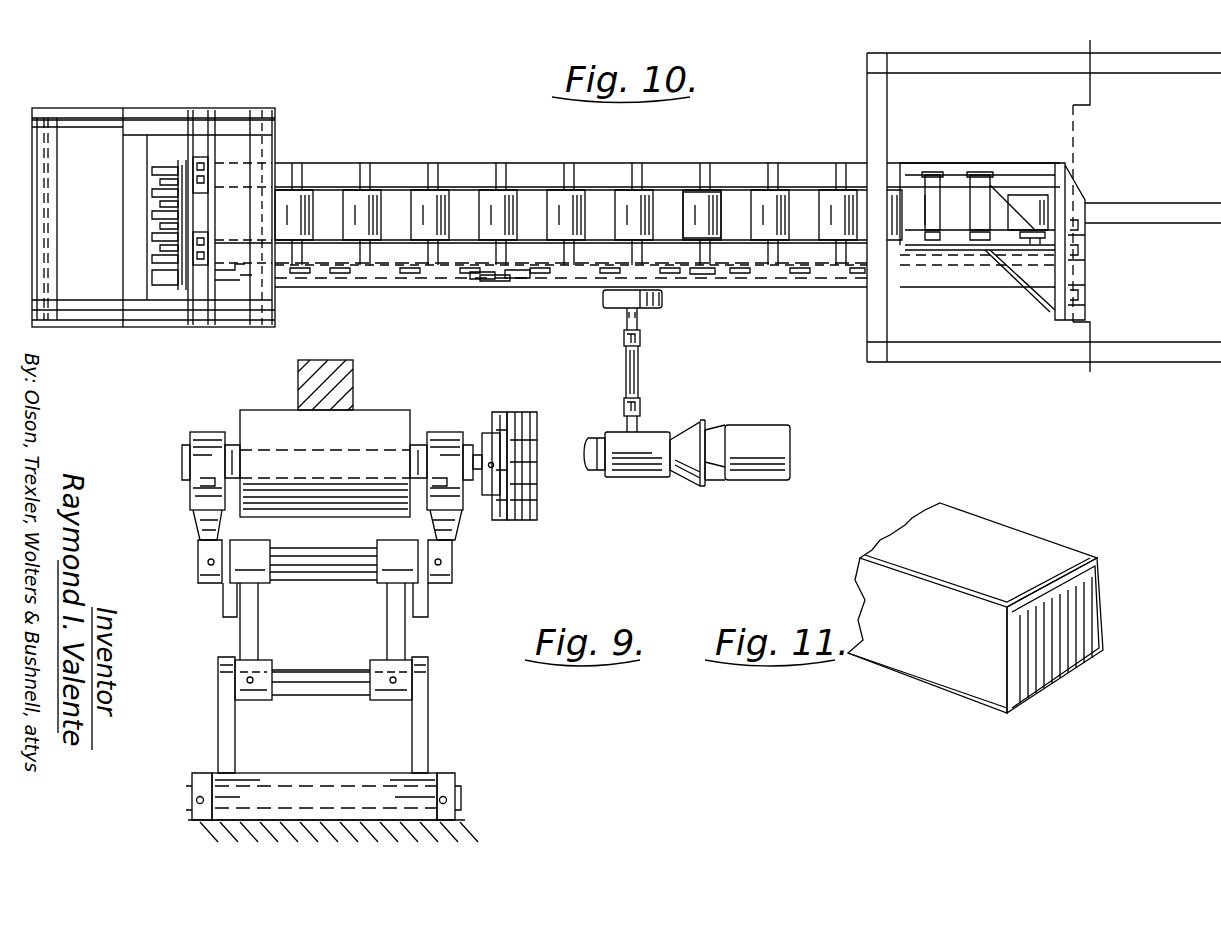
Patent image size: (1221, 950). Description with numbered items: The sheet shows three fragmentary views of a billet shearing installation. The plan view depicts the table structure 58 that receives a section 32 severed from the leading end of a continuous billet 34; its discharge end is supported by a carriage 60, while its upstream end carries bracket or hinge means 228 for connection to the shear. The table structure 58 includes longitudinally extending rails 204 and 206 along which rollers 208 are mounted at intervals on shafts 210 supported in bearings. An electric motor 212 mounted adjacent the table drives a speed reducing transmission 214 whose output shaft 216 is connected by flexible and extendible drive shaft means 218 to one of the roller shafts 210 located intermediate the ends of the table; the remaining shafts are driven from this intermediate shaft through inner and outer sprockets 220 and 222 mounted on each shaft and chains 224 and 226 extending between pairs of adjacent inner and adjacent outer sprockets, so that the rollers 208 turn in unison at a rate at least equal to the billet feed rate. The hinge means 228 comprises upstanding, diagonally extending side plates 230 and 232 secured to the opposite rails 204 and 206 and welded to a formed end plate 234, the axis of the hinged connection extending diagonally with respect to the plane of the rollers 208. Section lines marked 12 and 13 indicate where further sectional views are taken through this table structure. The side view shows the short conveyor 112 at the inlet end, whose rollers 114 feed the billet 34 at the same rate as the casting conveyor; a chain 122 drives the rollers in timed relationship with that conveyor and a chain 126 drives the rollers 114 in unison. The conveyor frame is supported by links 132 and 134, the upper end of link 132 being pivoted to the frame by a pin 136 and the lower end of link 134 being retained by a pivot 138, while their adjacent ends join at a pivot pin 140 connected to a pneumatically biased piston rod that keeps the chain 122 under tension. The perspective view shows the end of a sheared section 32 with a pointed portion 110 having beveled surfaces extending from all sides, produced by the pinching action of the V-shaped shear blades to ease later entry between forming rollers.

In FIG. 10, the section line 12 is at (1068, 91).
In FIG. 10, the section line 13 is at (185, 67).
In FIG. 11, the sections 32 is at (980, 530).
In FIG. 10, the continuous billet 34 is at (1175, 218).
In FIG. 9, the continuous billet 34 is at (318, 380).
In FIG. 10, the table structure 58 is at (392, 152).
In FIG. 10, the carriage 60 is at (271, 99).
In FIG. 11, the pointed portions 110 is at (1100, 565).
In FIG. 9, the short conveyor 112 is at (417, 405).
In FIG. 9, the rollers 114 is at (375, 420).
In FIG. 9, the chain 122 is at (507, 412).
In FIG. 9, the chain 126 is at (530, 412).
In FIG. 9, the link 132 is at (410, 632).
In FIG. 9, the link 134 is at (420, 728).
In FIG. 9, the pin 136 is at (343, 567).
In FIG. 9, the pivot 138 is at (465, 801).
In FIG. 9, the pivot pin 140 is at (310, 668).
In FIG. 10, the rail 204 is at (397, 255).
In FIG. 10, the rail 206 is at (460, 173).
In FIG. 10, the rollers 208 is at (722, 200).
In FIG. 10, the shafts 210 is at (700, 245).
In FIG. 10, the electric motor 212 is at (765, 438).
In FIG. 10, the speed reducing transmission 214 is at (655, 436).
In FIG. 10, the output shaft 216 is at (640, 430).
In FIG. 10, the flexible and extendible drive shaft means 218 is at (640, 366).
In FIG. 10, the inner sprockets 220 is at (480, 255).
In FIG. 10, the outer sprockets 222 is at (494, 270).
In FIG. 10, the chains 224 is at (600, 280).
In FIG. 10, the chains 226 is at (515, 280).
In FIG. 10, the hinge means 228 is at (1084, 170).
In FIG. 10, the side plate 230 is at (1050, 290).
In FIG. 10, the side plate 232 is at (1022, 178).
In FIG. 10, the end plate 234 is at (1070, 186).